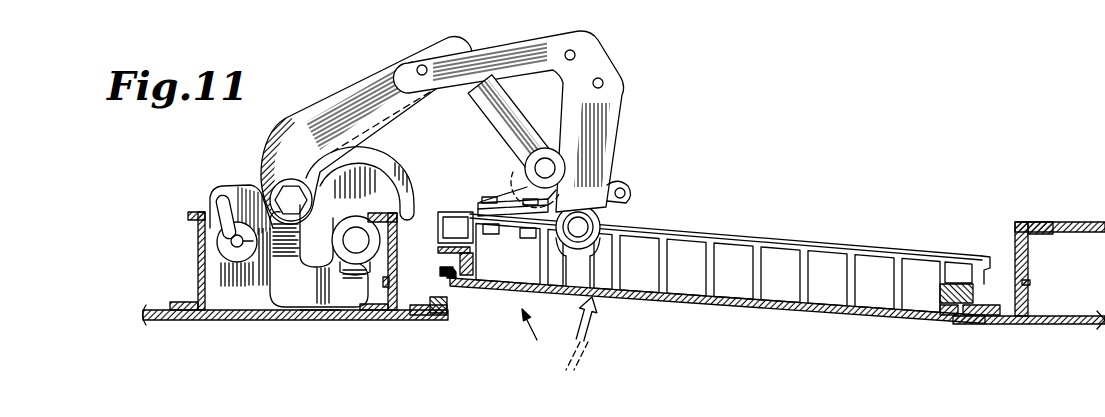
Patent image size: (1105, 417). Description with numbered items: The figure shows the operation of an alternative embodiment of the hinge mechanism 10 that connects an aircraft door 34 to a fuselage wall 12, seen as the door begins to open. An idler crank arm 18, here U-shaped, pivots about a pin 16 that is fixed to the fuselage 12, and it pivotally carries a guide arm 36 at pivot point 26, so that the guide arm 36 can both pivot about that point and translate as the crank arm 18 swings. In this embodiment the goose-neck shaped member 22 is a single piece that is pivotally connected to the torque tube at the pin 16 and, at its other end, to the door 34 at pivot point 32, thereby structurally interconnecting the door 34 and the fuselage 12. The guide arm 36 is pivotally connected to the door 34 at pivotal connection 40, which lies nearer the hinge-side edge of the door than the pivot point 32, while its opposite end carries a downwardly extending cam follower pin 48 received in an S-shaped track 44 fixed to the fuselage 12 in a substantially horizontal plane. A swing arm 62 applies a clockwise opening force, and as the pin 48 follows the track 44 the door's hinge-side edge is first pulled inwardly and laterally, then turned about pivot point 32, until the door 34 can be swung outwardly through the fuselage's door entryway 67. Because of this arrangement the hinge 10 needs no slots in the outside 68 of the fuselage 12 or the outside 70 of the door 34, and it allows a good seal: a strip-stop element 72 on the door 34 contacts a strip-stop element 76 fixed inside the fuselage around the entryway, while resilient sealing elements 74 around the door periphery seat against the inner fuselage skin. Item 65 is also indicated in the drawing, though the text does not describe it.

The hinge mechanism 10 is at (664, 86).
The fuselage wall 12 is at (283, 322).
The pin 16 is at (357, 240).
The idler crank arm 18 is at (280, 281).
The goose-neck shaped member 22 is at (586, 53).
The pivot point 26 is at (262, 172).
The pivot point 32 is at (587, 223).
The aircraft door 34 is at (756, 236).
The guide arm 36 is at (306, 122).
The pivotal connection 40 is at (556, 168).
The S-shaped track 44 is at (387, 172).
The cam follower pin 48 is at (211, 200).
The swing arm 62 is at (622, 183).
The door frame 65 is at (984, 272).
The door entryway 67 is at (559, 334).
The outside of the fuselage 68 is at (322, 319).
The outside of the door 70 is at (670, 306).
The strip-stop element 72 is at (445, 264).
The resilient sealing element 74 is at (447, 276).
The strip-stop element 76 is at (433, 311).